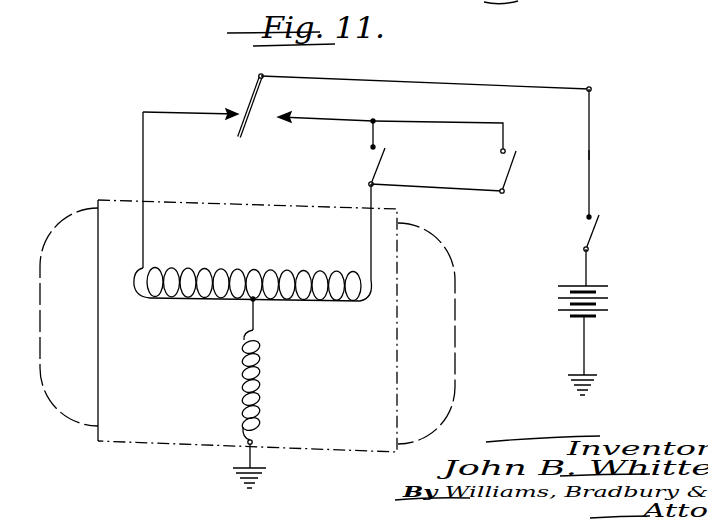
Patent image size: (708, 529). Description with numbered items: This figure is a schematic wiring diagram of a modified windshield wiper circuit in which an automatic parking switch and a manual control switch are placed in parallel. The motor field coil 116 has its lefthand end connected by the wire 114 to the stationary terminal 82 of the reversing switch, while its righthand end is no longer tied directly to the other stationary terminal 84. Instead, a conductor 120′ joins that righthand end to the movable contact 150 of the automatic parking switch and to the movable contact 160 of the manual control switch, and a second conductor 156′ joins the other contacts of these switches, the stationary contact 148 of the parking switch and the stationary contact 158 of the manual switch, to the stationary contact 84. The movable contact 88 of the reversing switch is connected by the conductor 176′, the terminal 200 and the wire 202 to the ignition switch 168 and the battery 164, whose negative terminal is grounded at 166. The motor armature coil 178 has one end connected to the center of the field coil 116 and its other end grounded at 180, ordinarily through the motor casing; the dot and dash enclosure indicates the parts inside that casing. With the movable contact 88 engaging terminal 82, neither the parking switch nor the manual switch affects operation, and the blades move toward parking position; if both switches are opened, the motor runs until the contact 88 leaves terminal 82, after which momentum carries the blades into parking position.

The stationary terminal of the reversing switch 82 is at (234, 112).
The stationary terminal of the reversing switch 84 is at (280, 116).
The movable contact of the reversing switch 88 is at (252, 99).
The wire 114 is at (143, 173).
The motor field coil 116 is at (215, 298).
The conductor 120′ is at (338, 248).
The stationary contact 148 is at (372, 147).
The movable contact 150 is at (384, 163).
The conductor 156′ is at (452, 122).
The stationary contact 158 is at (500, 151).
The movable contact 160 is at (512, 166).
The automobile battery 164 is at (606, 304).
The ground 166 is at (577, 379).
The ignition switch 168 is at (594, 232).
The conductor 176′ is at (466, 86).
The motor armature coil 178 is at (261, 369).
The ground 180 is at (257, 480).
The terminal 200 is at (587, 88).
The wire 202 is at (589, 163).